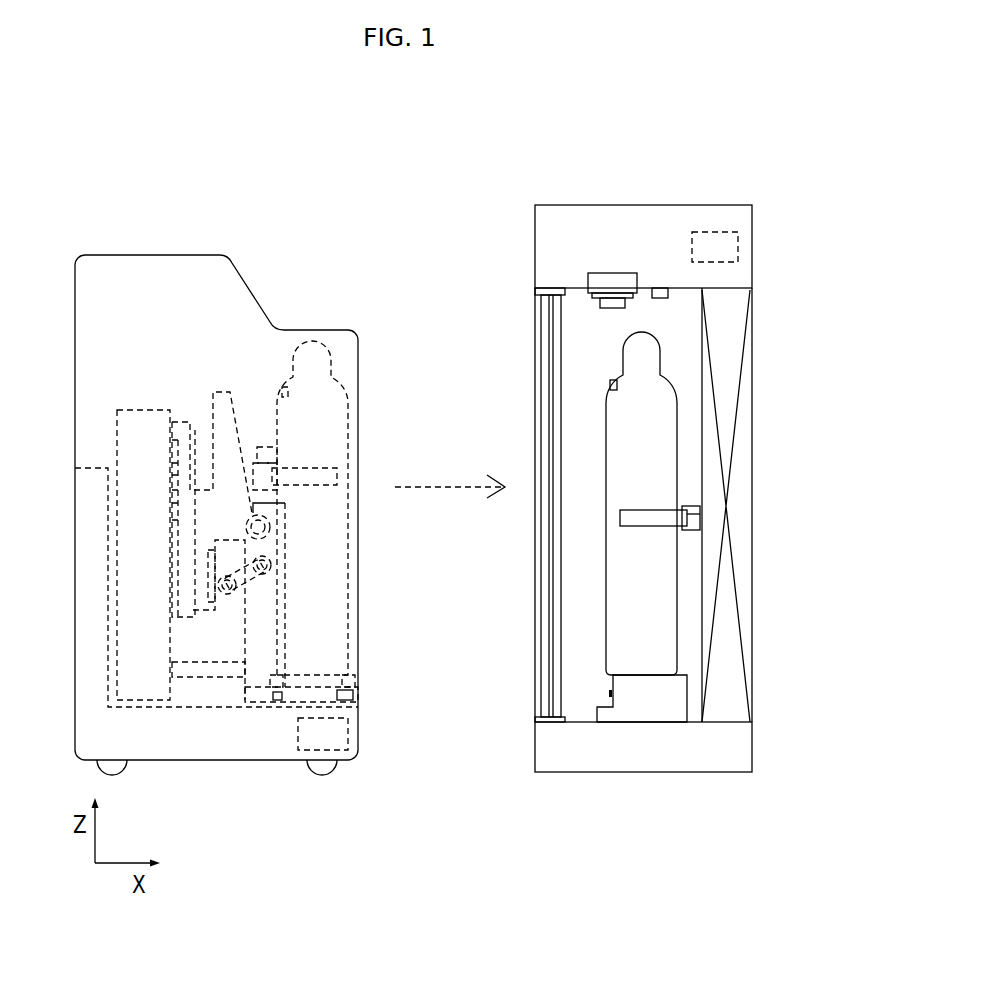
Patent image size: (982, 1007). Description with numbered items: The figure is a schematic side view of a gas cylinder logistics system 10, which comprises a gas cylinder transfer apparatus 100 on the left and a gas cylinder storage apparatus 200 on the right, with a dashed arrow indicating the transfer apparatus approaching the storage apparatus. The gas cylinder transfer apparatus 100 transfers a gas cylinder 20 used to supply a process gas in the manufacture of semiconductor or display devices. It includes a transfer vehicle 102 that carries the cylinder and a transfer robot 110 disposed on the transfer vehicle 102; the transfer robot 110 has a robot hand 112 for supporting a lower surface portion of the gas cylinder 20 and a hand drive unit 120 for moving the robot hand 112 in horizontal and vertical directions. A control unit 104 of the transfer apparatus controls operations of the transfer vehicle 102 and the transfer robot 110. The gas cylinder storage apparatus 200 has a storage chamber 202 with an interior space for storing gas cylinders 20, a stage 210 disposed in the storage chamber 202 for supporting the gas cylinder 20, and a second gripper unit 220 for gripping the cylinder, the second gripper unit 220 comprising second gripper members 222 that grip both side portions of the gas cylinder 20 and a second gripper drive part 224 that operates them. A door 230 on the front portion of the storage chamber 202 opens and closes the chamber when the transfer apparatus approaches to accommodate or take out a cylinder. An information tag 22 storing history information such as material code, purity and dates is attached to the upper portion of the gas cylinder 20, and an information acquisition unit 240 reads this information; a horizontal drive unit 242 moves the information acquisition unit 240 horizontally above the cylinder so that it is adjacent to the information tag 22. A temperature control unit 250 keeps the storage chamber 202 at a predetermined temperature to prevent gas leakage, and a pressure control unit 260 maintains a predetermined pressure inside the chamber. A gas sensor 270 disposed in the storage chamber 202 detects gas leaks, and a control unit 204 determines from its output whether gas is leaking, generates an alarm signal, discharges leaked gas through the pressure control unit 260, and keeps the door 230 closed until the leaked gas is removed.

The gas cylinder logistics system 10 is at (224, 199).
The gas cylinder transfer apparatus 100 is at (285, 277).
The transfer vehicle 102 is at (187, 752).
The control unit 104 is at (348, 733).
The transfer robot 110 is at (176, 385).
The robot hand 112 is at (273, 716).
The hand drive unit 120 is at (165, 641).
The gas cylinder storage apparatus 200 is at (516, 752).
The storage chamber 202 is at (568, 632).
The control unit 204 is at (738, 245).
The stage 210 is at (645, 718).
The second gripper unit 220 is at (715, 527).
The second gripper member 222 is at (620, 518).
The second gripper drive part 224 is at (700, 517).
The door 230 is at (542, 358).
The information acquisition unit 240 is at (600, 305).
The horizontal drive unit 242 is at (588, 280).
The temperature control unit 250 is at (747, 477).
The pressure control unit 260 is at (547, 225).
The gas sensor 270 is at (668, 295).
The gas cylinder 20 is at (613, 433).
The information tag 22 is at (613, 382).